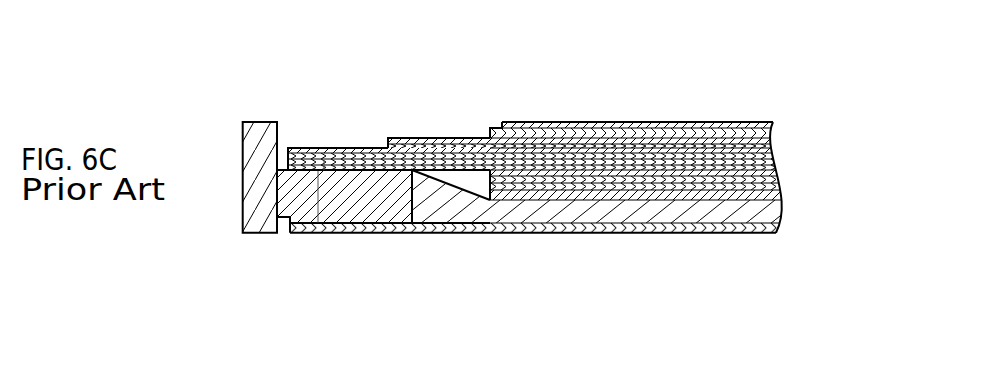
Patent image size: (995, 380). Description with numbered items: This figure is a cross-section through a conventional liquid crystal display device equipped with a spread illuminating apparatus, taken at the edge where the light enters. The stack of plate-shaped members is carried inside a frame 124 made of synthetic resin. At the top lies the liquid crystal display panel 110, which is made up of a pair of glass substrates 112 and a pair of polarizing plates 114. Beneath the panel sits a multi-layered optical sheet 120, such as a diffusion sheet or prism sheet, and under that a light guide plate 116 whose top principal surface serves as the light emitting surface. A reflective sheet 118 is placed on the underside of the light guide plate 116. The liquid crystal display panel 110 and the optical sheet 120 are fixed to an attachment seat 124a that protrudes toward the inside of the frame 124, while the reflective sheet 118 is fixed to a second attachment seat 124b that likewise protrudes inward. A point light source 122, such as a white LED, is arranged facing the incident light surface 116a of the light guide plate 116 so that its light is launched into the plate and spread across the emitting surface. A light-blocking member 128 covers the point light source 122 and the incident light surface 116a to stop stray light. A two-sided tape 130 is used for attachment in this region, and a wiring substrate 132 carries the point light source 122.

The liquid crystal display panel 110 is at (725, 122).
The glass substrates 112 is at (525, 126).
The polarizing plates 114 is at (605, 126).
The light guide plate 116 is at (562, 221).
The incident light surface 116a is at (408, 203).
The reflective sheet 118 is at (653, 234).
The optical sheet 120 is at (721, 201).
The point light source 122 is at (372, 213).
The frame 124 is at (257, 212).
The attachment seat 124a is at (308, 147).
The attachment seat 124b is at (283, 228).
The light-blocking member 128 is at (363, 147).
The two-sided tape 130 is at (318, 200).
The wiring substrate 132 is at (343, 200).